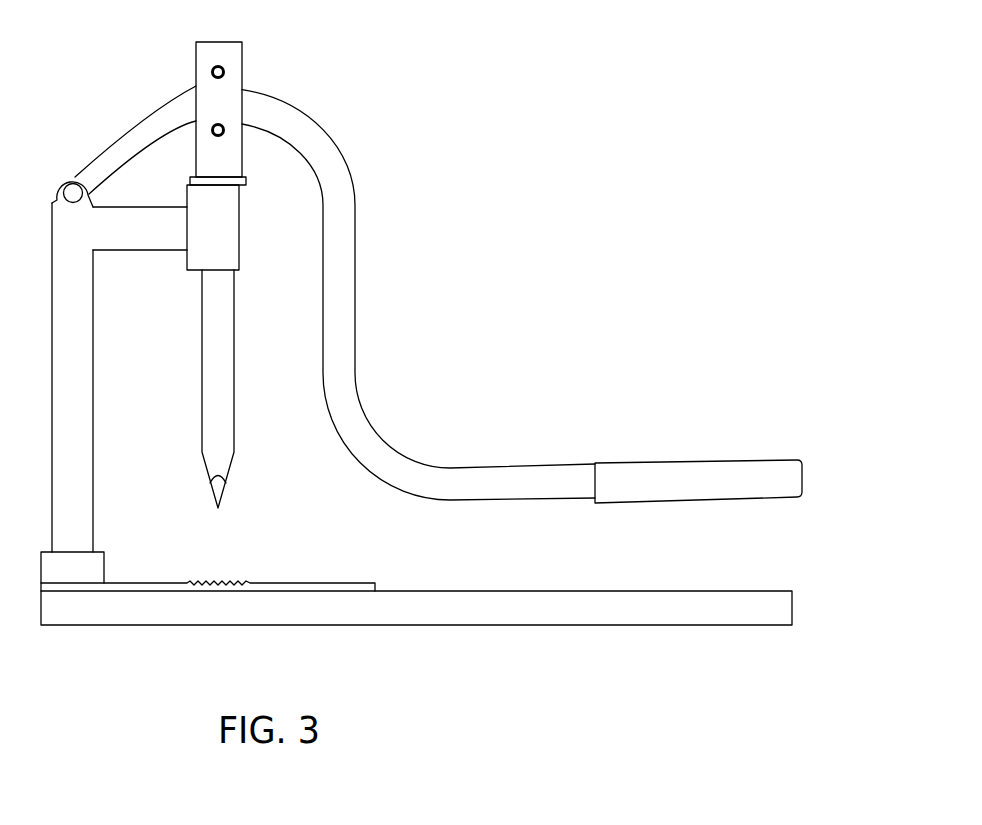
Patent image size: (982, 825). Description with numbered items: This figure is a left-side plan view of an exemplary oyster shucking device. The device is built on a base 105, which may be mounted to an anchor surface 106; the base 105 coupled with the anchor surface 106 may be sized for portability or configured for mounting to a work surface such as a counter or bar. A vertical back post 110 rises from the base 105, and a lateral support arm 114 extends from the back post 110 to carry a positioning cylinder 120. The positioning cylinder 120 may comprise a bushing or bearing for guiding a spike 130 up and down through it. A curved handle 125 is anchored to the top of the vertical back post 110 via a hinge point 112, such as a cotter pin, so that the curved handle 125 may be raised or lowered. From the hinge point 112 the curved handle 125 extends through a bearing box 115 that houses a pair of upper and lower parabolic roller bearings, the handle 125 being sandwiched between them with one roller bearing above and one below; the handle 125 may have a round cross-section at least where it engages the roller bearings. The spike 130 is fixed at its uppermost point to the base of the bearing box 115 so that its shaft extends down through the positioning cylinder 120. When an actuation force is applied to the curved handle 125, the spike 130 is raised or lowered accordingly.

The base 105 is at (307, 585).
The anchor surface 106 is at (460, 600).
The vertical back post 110 is at (88, 495).
The hinge point 112 is at (73, 188).
The lateral support arm 114 is at (108, 238).
The bearing box 115 is at (235, 54).
The positioning cylinder 120 is at (229, 227).
The curved handle 125 is at (345, 293).
The spike 130 is at (230, 428).